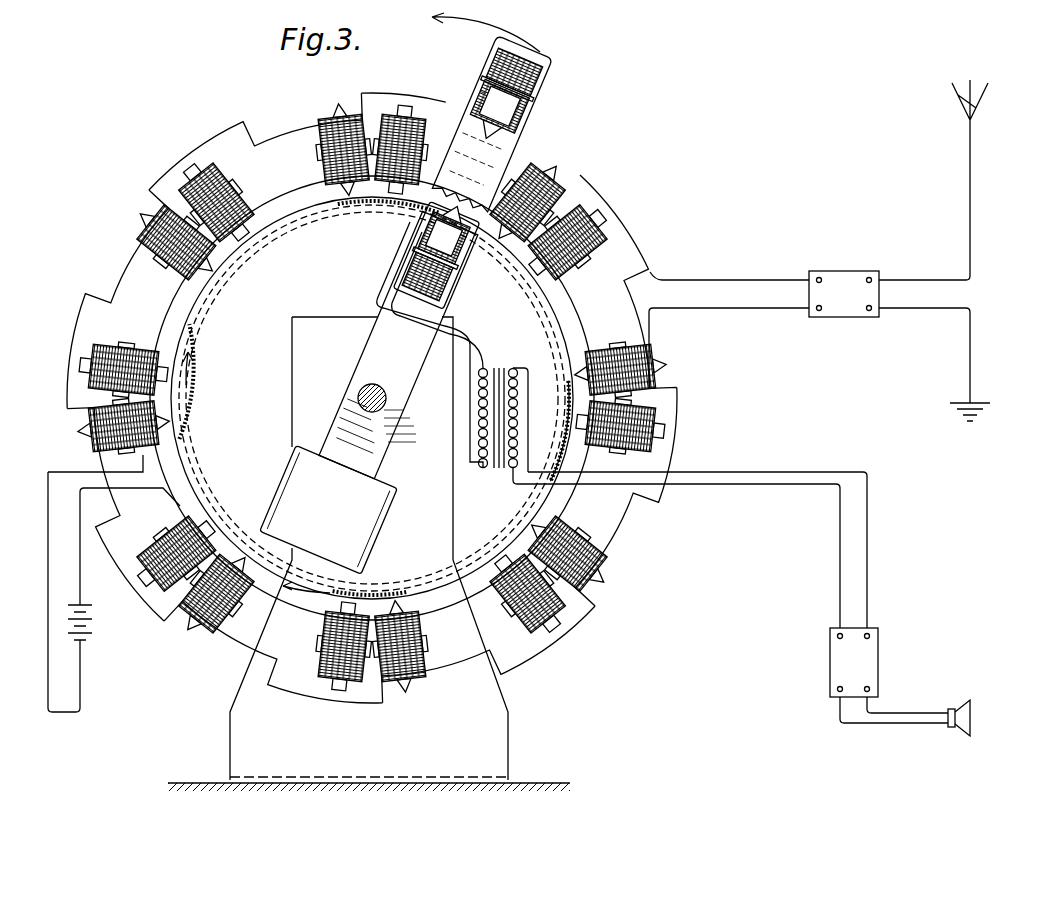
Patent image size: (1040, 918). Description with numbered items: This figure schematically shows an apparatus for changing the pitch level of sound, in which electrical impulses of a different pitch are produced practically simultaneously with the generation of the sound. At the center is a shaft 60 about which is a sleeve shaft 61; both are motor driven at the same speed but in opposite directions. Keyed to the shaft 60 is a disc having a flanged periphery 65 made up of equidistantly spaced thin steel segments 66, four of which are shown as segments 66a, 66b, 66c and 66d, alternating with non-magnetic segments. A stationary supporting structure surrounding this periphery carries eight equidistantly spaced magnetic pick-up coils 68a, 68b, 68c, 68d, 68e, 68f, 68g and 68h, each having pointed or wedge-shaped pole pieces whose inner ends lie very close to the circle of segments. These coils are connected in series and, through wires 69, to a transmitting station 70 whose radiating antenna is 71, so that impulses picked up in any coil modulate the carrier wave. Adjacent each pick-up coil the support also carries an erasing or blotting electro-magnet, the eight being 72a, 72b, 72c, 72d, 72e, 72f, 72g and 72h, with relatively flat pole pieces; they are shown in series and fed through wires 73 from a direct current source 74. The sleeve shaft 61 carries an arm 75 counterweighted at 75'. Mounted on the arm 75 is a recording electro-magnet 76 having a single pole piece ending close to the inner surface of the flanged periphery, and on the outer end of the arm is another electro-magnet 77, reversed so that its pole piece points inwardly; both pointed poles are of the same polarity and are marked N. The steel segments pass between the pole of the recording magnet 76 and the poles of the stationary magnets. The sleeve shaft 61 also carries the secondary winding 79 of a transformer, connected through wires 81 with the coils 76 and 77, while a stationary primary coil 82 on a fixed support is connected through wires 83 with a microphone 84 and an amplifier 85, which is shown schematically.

The shaft 60 is at (388, 398).
The sleeve shaft 61 is at (393, 411).
The flanged periphery 65 is at (311, 218).
The steel segments 66 is at (568, 396).
The steel segment 66a is at (392, 201).
The steel segment 66b is at (192, 322).
The steel segment 66c is at (393, 584).
The steel segment 66d is at (548, 487).
The magnetic pick-up coil 68a is at (338, 118).
The magnetic pick-up coil 68b is at (150, 238).
The magnetic pick-up coil 68c is at (98, 440).
The magnetic pick-up coil 68d is at (218, 620).
The magnetic pick-up coil 68e is at (420, 653).
The magnetic pick-up coil 68f is at (600, 551).
The magnetic pick-up coil 68g is at (652, 356).
The magnetic pick-up coil 68h is at (543, 166).
The wires 69 is at (700, 280).
The transmitting station 70 is at (838, 280).
The radiating antenna 71 is at (962, 106).
The electro-magnet 72a is at (420, 120).
The electro-magnet 72b is at (240, 170).
The electro-magnet 72c is at (120, 355).
The electro-magnet 72d is at (168, 550).
The electro-magnet 72e is at (318, 655).
The electro-magnet 72f is at (533, 613).
The electro-magnet 72g is at (660, 441).
The electro-magnet 72h is at (596, 255).
The wires 73 is at (172, 305).
The direct current source 74 is at (92, 632).
The arm 75 is at (447, 257).
The counterweight 75' is at (329, 510).
The recording electro-magnet 76 is at (446, 282).
The electro-magnet 77 is at (536, 72).
The secondary winding 79 is at (528, 374).
The wires 81 is at (392, 262).
The primary coil 82 is at (492, 364).
The wires 83 is at (780, 472).
The microphone 84 is at (970, 717).
The amplifier 85 is at (875, 655).